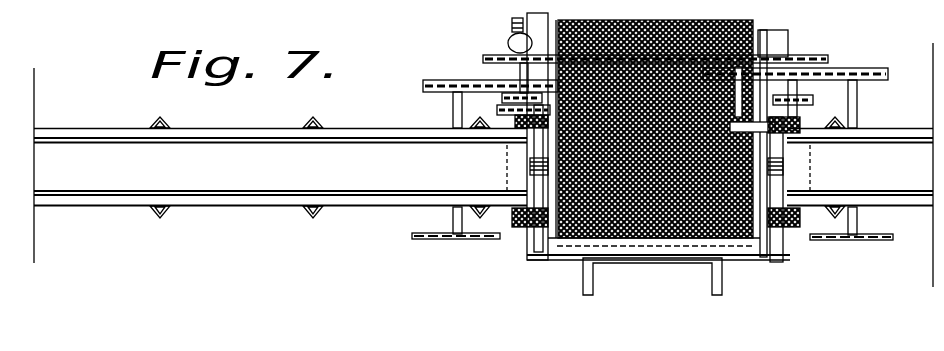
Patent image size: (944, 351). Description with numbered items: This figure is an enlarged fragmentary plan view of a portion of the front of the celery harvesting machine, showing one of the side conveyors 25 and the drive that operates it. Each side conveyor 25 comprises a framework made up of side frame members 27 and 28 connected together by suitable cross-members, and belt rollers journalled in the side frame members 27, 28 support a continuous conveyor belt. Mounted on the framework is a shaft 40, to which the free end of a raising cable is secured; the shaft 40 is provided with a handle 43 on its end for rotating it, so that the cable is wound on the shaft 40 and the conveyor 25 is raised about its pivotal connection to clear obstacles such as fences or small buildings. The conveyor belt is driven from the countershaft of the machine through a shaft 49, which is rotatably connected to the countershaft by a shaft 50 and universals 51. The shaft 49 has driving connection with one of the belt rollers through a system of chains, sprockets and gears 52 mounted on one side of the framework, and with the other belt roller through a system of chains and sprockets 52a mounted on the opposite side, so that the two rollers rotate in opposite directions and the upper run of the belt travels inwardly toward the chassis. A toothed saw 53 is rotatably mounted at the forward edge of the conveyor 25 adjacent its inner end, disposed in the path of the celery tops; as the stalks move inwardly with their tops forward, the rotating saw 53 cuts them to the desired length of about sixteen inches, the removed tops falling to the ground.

The side conveyor 25 is at (247, 182).
The side frame member 27 is at (110, 205).
The side frame member 28 is at (107, 118).
The shaft 40 is at (783, 248).
The handle 43 is at (712, 277).
The shaft 49 is at (518, 70).
The shaft 50 is at (512, 22).
The universal 51 is at (508, 42).
The system of chains, sprockets and gears 52 is at (503, 103).
The system of chains and sprockets 52a is at (807, 96).
The saw 53 is at (450, 239).